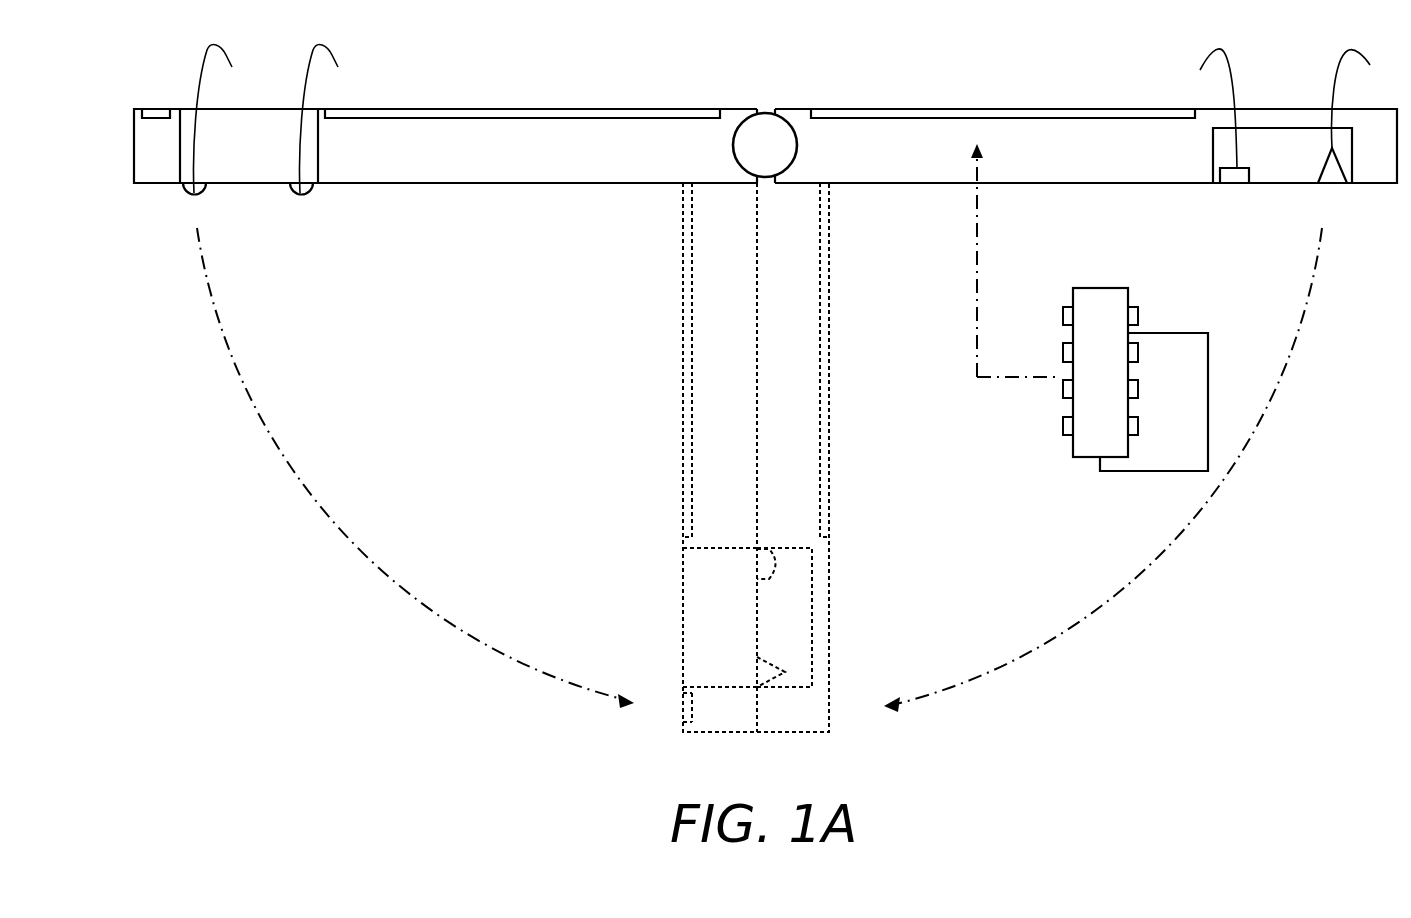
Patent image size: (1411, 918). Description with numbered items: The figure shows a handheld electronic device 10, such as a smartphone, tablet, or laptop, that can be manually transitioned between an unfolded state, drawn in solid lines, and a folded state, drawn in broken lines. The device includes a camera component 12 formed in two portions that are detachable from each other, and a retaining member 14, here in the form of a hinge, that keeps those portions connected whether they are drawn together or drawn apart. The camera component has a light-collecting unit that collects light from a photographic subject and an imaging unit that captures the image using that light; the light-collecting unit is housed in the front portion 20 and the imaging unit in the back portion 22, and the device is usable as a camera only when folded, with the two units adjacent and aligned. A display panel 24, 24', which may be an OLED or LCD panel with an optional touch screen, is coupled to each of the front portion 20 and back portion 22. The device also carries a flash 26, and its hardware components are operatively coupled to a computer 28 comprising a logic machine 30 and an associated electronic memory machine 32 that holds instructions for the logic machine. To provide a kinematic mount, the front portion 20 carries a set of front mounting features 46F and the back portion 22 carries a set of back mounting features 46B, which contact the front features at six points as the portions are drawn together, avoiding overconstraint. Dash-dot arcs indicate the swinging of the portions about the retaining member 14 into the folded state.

The handheld electronic device 10 is at (243, 665).
The camera component 12 is at (716, 457).
The retaining member 14 is at (740, 128).
The front portion 20 is at (493, 159).
The back portion 22 is at (1008, 159).
The display panel 24 is at (522, 77).
The display panel 24' is at (1003, 77).
The flash 26 is at (153, 109).
The computer 28 is at (1149, 359).
The logic machine 30 is at (1143, 414).
The electronic memory machine 32 is at (1088, 384).
The front mounting features 46F is at (275, 120).
The back mounting features 46B is at (1281, 108).